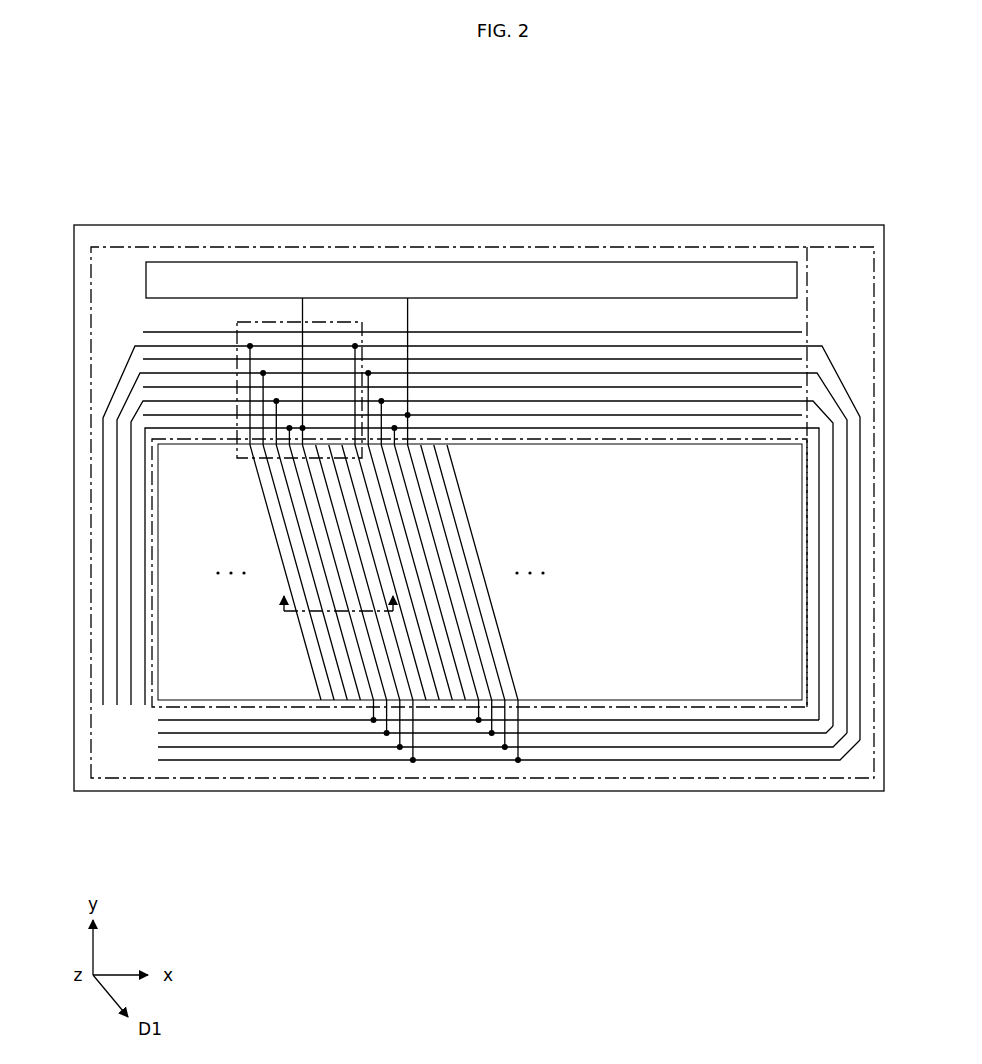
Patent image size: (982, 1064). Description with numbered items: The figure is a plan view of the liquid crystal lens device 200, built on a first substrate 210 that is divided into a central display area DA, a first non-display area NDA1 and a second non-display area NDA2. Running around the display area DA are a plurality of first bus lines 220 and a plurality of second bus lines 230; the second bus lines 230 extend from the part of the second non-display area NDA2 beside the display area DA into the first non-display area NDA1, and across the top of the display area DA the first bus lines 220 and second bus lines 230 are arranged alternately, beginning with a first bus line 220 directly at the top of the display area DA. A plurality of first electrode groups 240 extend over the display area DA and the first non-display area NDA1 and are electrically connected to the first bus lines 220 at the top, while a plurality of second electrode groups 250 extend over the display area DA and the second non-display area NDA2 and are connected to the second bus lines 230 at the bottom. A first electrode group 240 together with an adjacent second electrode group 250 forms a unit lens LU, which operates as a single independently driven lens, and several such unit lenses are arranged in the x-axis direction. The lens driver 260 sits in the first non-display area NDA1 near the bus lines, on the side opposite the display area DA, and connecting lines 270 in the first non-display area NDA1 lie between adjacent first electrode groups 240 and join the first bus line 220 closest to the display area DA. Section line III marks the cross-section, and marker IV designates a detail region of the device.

The liquid crystal lens device 200 is at (661, 166).
The first substrate 210 is at (758, 223).
The first bus lines 220 is at (143, 712).
The second bus lines 230 is at (158, 719).
The first electrode groups 240 is at (345, 647).
The second electrode groups 250 is at (398, 647).
The lens driver 260 is at (466, 262).
The connecting lines 270 is at (305, 297).
The first non-display area NDA1 is at (122, 284).
The second non-display area NDA2 is at (867, 760).
The display area DA is at (698, 666).
The unit lens LU is at (350, 848).
The section line IV is at (246, 300).
The section line III-III' III is at (339, 614).